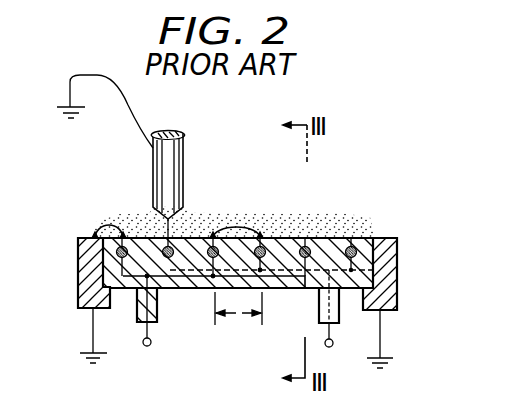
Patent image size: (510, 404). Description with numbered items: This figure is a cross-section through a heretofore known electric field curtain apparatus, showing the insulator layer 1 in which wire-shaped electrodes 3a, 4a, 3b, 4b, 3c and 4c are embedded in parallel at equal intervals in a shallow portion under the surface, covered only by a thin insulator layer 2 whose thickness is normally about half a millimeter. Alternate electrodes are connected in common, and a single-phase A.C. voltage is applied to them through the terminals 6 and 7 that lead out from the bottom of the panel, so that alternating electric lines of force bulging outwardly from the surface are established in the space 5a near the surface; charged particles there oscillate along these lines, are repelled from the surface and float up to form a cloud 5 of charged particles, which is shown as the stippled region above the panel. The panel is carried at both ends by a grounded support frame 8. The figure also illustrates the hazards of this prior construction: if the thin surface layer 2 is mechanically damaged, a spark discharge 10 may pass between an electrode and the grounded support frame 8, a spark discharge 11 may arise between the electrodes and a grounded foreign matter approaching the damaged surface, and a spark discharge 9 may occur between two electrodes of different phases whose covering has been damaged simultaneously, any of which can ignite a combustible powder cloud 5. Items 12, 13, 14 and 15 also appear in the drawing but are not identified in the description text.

The insulator layer 1 is at (350, 238).
The thin insulator layer 2 is at (363, 240).
The wire-shaped electrode 3a is at (371, 243).
The wire-shaped electrode 3b is at (262, 238).
The wire-shaped electrode 3c is at (187, 238).
The wire-shaped electrode 4a is at (309, 238).
The wire-shaped electrode 4b is at (214, 238).
The wire-shaped electrode 4c is at (128, 237).
The cloud of charged particles 5 is at (287, 238).
The space near the surface 5a is at (337, 238).
The terminal 6 is at (334, 331).
The terminal 7 is at (141, 329).
The grounded support frame 8 is at (84, 273).
The spark discharge 9 is at (233, 227).
The spark discharge 10 is at (107, 227).
The spark discharge 11 is at (153, 237).
The electrode probe 12 is at (161, 133).
The spacing dimension 13 is at (238, 316).
The base layer 14 is at (197, 279).
The lead pattern 15 is at (283, 276).